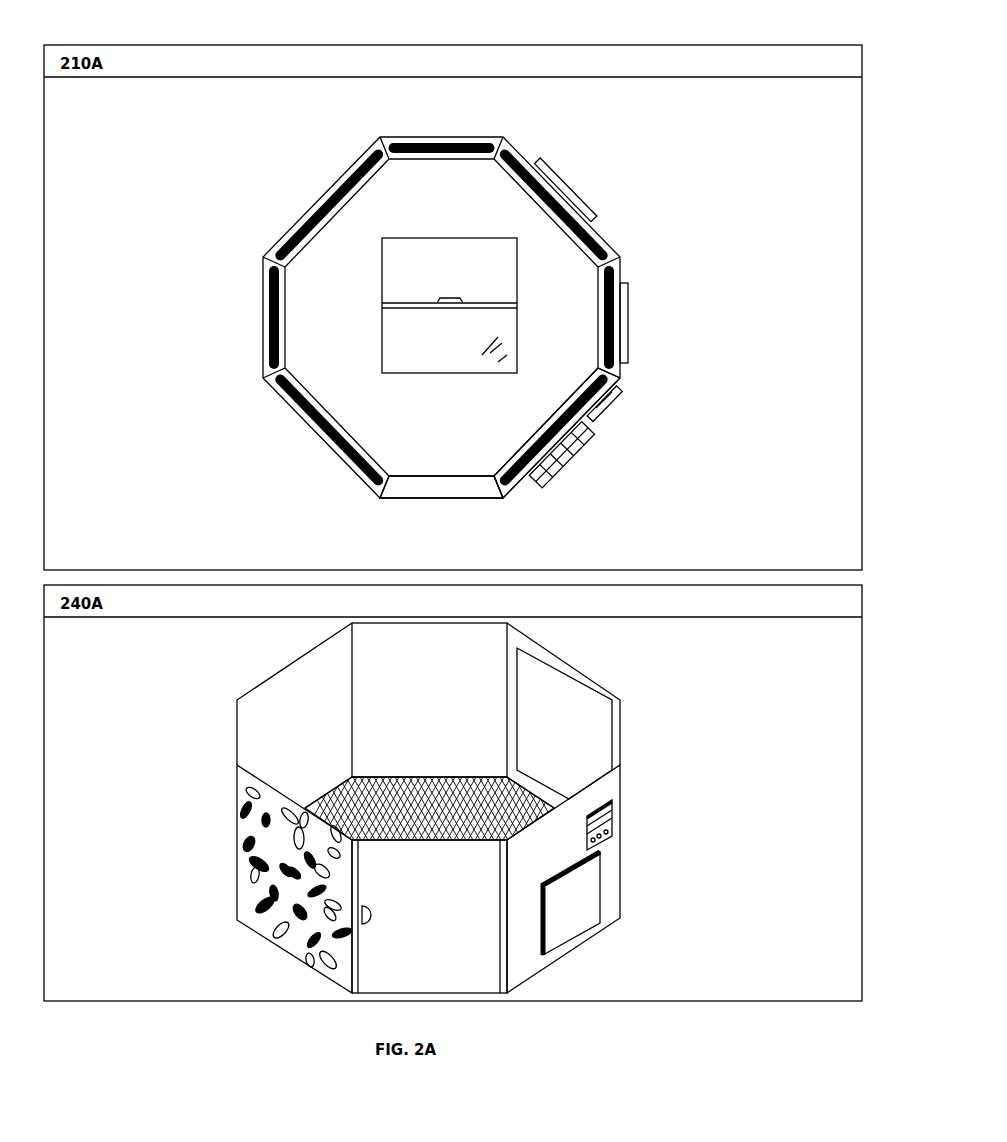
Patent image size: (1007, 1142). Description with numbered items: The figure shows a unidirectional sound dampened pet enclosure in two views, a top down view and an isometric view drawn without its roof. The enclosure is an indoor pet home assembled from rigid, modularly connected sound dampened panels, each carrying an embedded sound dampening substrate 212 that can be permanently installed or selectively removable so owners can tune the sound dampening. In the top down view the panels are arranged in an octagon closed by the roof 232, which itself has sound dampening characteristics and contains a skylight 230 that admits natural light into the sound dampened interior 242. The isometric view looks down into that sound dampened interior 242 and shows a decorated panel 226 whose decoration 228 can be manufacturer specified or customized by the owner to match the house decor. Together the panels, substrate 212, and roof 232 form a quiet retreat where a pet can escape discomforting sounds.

The sound dampening substrate 212 is at (263, 313).
The decorated panel 226 is at (225, 879).
The decoration 228 is at (247, 835).
The skylight 230 is at (407, 375).
The roof panel 232 is at (384, 208).
The sound dampened interior 242 is at (337, 805).